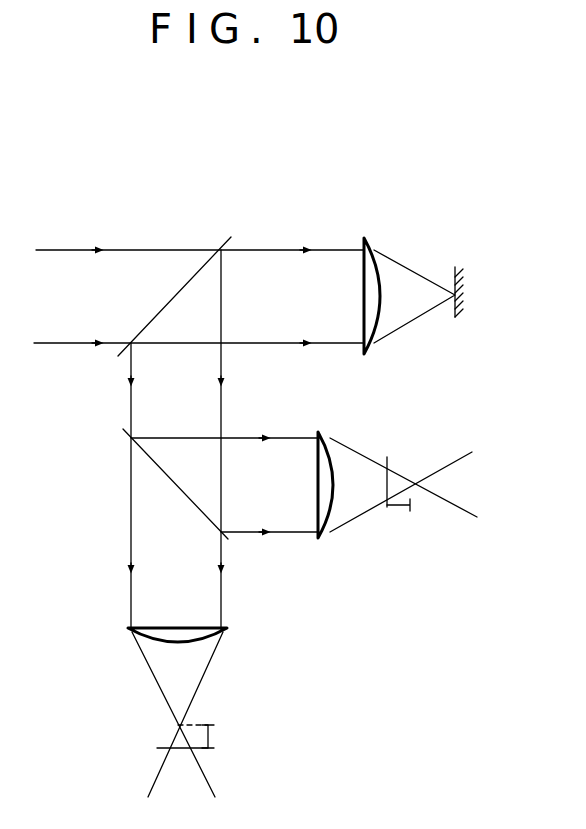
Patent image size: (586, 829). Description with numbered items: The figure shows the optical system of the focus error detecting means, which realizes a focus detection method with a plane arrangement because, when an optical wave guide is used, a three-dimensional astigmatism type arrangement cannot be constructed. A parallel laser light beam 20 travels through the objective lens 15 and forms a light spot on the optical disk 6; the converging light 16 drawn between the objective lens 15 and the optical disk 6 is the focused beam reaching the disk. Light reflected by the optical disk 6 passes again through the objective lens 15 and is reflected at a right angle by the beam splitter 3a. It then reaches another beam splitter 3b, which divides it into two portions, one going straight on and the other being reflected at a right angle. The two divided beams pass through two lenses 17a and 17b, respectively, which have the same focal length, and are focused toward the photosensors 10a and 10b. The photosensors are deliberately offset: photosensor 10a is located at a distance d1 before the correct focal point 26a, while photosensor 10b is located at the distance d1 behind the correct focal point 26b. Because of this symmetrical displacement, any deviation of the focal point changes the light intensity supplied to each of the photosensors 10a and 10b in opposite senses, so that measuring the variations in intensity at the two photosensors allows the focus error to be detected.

The parallel laser light beam 20 is at (63, 278).
The beam splitter 3a is at (185, 284).
The beam splitter 3b is at (158, 469).
The objective lens 15 is at (366, 240).
The converging light beam 16 is at (440, 306).
The optical disk 6 is at (453, 278).
The lens 17a is at (320, 541).
The lens 17b is at (229, 631).
The correct focal point 26a is at (411, 484).
The correct focal point 26b is at (178, 725).
The photosensor 10a is at (387, 510).
The photosensor 10b is at (157, 752).
The distance d1 is at (405, 509).